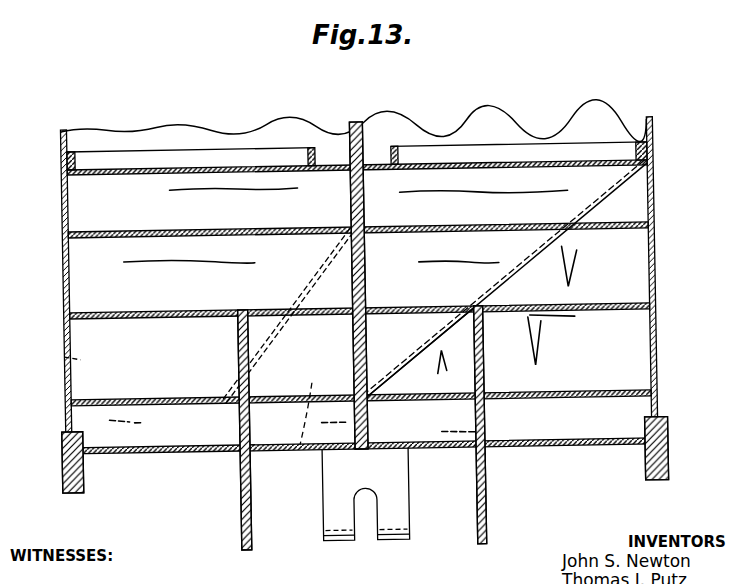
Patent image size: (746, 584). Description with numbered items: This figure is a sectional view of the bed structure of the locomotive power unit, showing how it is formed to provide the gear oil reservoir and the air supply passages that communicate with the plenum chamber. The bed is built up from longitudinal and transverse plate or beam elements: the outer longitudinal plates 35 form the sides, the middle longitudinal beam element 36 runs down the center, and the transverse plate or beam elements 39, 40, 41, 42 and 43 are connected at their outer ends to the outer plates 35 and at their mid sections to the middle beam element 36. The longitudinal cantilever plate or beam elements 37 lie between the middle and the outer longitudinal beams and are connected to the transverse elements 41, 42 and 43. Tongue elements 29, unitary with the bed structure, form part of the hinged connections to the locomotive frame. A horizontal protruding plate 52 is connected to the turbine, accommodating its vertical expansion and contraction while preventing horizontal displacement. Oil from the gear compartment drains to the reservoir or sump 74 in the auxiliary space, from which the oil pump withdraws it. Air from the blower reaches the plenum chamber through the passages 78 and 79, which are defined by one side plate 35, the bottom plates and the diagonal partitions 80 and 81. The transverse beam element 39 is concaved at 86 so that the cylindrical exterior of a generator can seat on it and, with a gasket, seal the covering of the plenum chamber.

The tongue element 29 is at (60, 480).
The outer longitudinal plate or beam element 35 is at (64, 258).
The middle longitudinal plate or beam element 36 is at (366, 280).
The longitudinal cantilever plate or beam element 37 is at (248, 497).
The transverse plate or beam element 39 is at (165, 175).
The transverse plate or beam element 40 is at (203, 229).
The transverse plate or beam element 41 is at (176, 308).
The transverse plate or beam element 42 is at (157, 395).
The transverse plate or beam element 43 is at (173, 443).
The horizontal protruding plate 52 is at (405, 500).
The reservoir or sump 74 is at (656, 290).
The passage 78 is at (84, 354).
The passage 79 is at (299, 430).
The diagonal partition 80 is at (272, 342).
The diagonal partition 81 is at (428, 343).
The concavity 86 is at (182, 147).